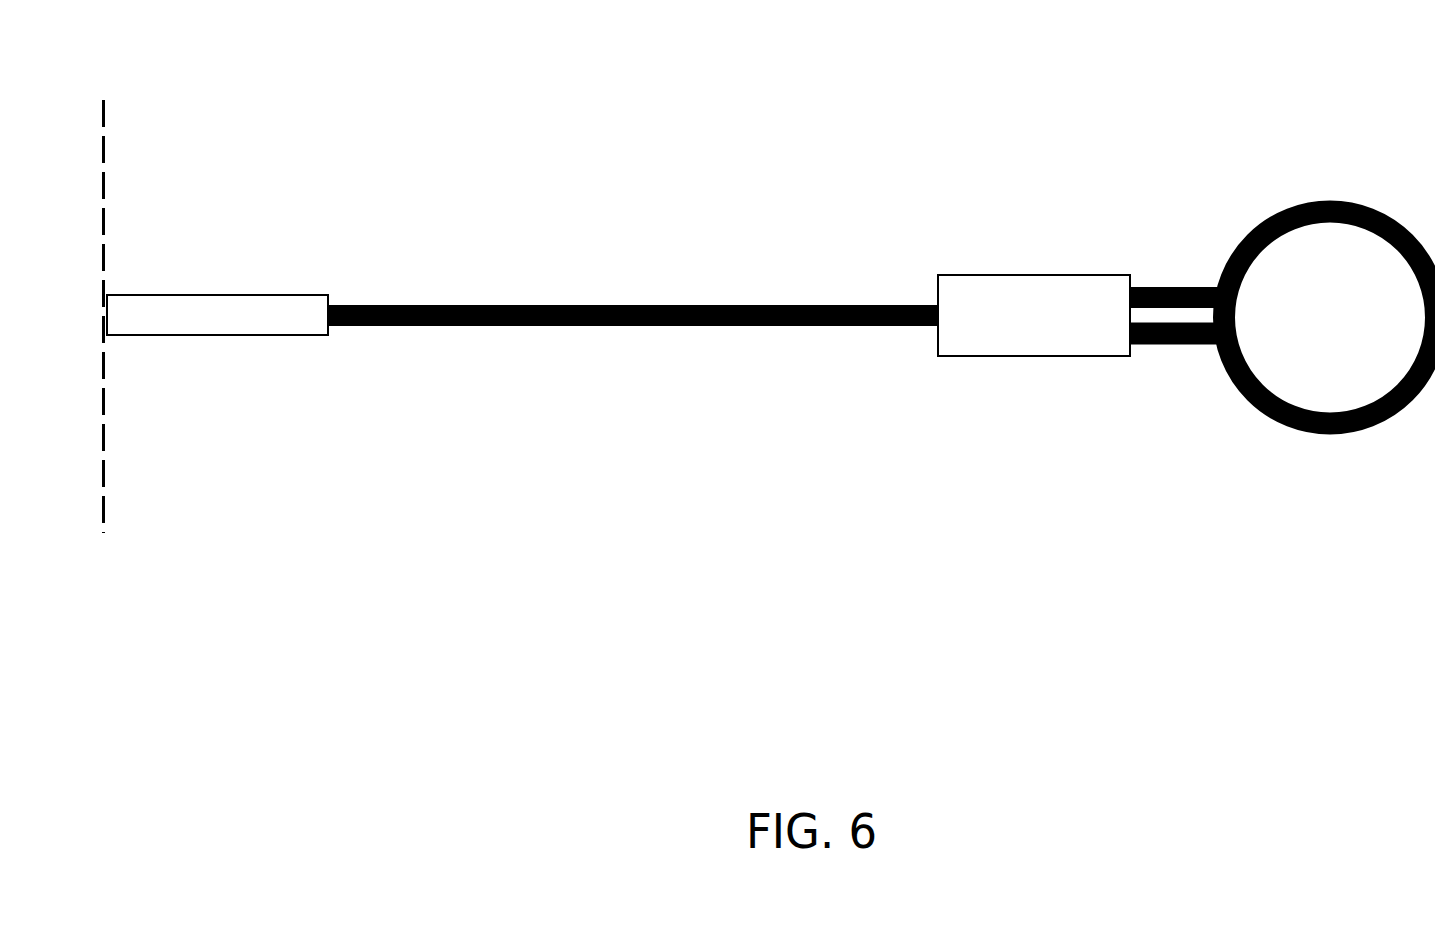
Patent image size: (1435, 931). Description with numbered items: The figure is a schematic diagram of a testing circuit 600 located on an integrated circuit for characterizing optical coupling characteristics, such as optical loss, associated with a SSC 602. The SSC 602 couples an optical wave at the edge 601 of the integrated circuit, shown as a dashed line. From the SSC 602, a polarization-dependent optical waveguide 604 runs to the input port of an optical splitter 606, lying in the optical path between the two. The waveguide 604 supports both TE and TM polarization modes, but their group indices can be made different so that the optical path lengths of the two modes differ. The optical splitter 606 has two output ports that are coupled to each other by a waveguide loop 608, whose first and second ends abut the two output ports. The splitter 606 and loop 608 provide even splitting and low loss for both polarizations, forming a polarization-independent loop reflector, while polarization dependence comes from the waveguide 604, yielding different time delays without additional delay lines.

The testing circuit 600 is at (823, 80).
The edge 601 is at (104, 117).
The SSC 602 is at (217, 315).
The polarization-dependent optical waveguide 604 is at (725, 305).
The optical splitter 606 is at (1082, 315).
The waveguide loop 608 is at (1295, 203).